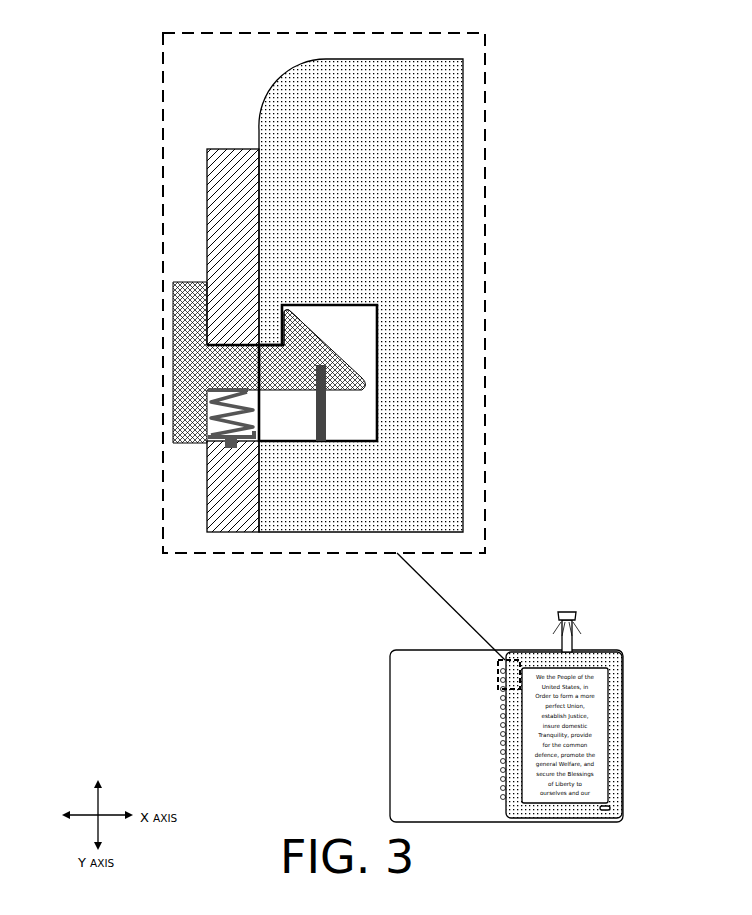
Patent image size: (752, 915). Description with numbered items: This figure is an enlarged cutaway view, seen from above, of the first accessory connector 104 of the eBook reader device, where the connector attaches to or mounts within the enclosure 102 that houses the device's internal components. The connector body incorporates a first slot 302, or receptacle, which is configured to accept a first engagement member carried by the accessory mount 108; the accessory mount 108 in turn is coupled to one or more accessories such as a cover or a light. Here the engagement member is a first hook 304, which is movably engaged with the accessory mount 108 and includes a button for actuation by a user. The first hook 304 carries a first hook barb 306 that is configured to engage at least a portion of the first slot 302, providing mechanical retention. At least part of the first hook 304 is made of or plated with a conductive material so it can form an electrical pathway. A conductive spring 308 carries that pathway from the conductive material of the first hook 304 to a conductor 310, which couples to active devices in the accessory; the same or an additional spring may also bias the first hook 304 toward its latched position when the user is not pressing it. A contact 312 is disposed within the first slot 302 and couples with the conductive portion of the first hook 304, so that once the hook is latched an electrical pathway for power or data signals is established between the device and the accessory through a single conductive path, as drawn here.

The enclosure 102 is at (408, 207).
The first accessory connector 104 is at (518, 38).
The accessory mount 108 is at (225, 522).
The first slot 302 is at (378, 355).
The first hook 304 is at (305, 352).
The first hook barb 306 is at (283, 312).
The conductive spring 308 is at (228, 422).
The conductor 310 is at (229, 444).
The contact 312 is at (326, 405).